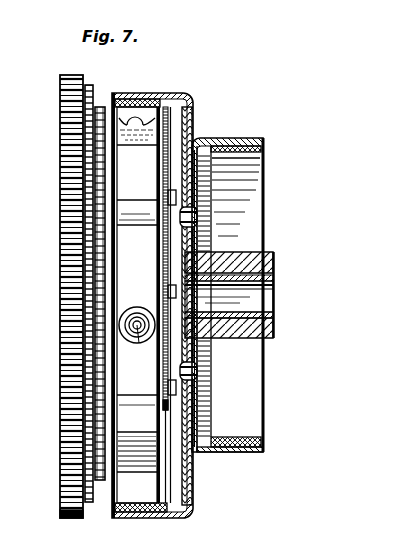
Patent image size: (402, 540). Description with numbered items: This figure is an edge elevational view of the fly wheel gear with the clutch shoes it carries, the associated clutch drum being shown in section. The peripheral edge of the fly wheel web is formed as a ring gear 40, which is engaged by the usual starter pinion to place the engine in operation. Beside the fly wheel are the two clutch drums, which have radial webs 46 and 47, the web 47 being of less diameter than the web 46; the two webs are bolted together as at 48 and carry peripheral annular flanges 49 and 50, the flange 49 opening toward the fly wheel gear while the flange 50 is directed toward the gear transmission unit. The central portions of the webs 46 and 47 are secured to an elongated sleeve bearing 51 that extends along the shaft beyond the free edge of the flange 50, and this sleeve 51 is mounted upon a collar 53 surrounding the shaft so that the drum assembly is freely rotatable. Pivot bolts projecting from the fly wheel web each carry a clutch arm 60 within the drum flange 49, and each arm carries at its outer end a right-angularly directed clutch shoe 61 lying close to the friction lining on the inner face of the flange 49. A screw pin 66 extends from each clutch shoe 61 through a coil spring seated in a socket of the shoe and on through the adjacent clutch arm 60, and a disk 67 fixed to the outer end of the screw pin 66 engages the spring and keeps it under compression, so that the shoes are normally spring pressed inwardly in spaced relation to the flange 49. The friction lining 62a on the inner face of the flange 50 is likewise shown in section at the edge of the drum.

The ring gear 40 is at (61, 496).
The radial web 46 is at (192, 486).
The radial web 47 is at (198, 424).
The bolts 48 is at (199, 372).
The annular flange 49 is at (163, 96).
The annular flange 50 is at (240, 137).
The sleeve bearing 51 is at (258, 344).
The collar 53 is at (266, 251).
The clutch arm 60 is at (125, 417).
The clutch shoe 61 is at (122, 139).
The packing 62a is at (260, 440).
The screw pin 66 is at (142, 314).
The disk 67 is at (139, 344).